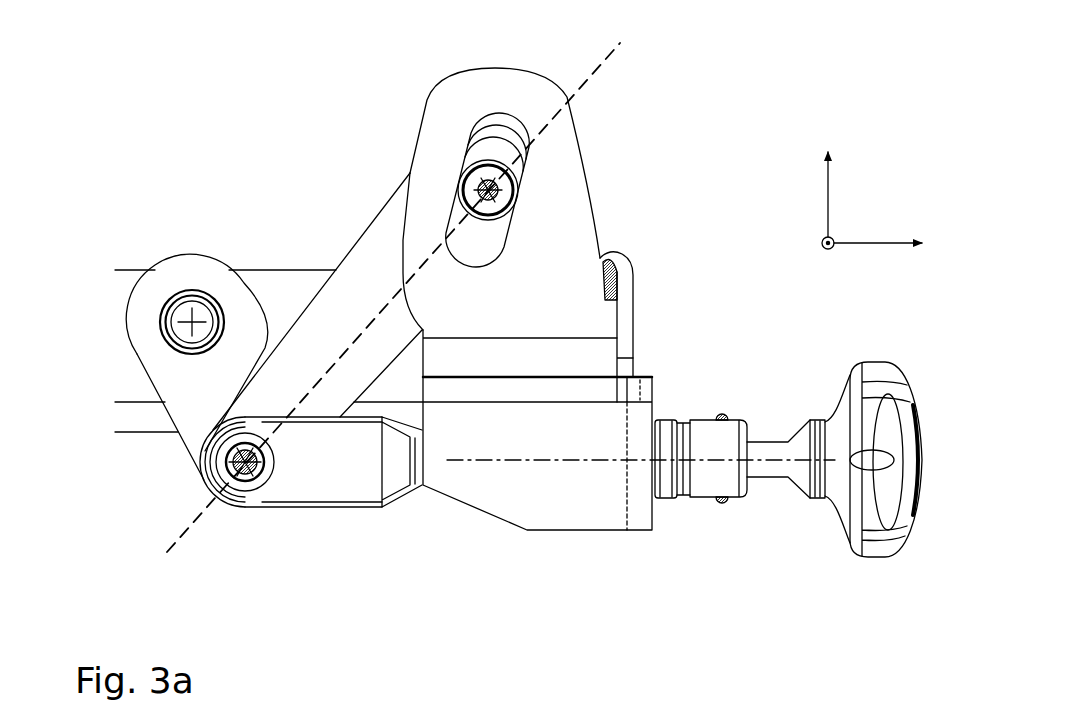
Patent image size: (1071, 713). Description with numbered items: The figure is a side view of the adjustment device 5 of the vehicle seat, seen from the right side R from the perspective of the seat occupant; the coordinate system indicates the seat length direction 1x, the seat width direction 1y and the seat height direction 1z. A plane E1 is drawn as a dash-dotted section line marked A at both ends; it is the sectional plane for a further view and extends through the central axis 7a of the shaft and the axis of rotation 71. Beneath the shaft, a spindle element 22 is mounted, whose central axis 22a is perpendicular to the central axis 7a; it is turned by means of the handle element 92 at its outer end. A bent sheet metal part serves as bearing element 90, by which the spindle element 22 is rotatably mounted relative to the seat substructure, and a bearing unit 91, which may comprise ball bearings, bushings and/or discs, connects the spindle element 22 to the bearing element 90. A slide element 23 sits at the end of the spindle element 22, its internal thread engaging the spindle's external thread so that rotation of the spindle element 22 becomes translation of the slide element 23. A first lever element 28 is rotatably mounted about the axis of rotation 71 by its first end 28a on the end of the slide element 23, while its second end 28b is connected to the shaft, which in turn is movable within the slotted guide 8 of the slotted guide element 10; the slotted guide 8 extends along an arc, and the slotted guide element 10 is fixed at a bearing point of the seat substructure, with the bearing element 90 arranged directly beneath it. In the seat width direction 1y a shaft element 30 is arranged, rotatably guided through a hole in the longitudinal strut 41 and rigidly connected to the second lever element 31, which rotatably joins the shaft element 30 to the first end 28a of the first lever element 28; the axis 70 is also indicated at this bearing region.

The adjustment device 5 is at (746, 160).
The central axis of the shaft 7a is at (504, 185).
The slotted guide 8 is at (506, 106).
The slotted guide element 10 is at (574, 231).
The spindle element 22 is at (728, 437).
The central axis of the spindle element 22a is at (572, 463).
The slide element 23 is at (342, 492).
The first lever element 28 is at (378, 248).
The first end of the first lever element 28a is at (203, 490).
The second end of the first lever element 28b is at (440, 76).
The shaft element 30 is at (210, 298).
The second lever element 31 is at (143, 325).
The longitudinal strut 41 is at (282, 292).
The axis 70 is at (172, 335).
The axis of rotation 71 is at (258, 482).
The bearing element 90 is at (524, 518).
The bearing unit 91 is at (693, 402).
The handle element 92 is at (880, 413).
The seat length direction 1x is at (900, 248).
The seat width direction 1y is at (834, 251).
The seat height direction 1z is at (826, 202).
The right side R is at (800, 273).
The section line A- A is at (618, 53).
The plane E1 is at (602, 62).